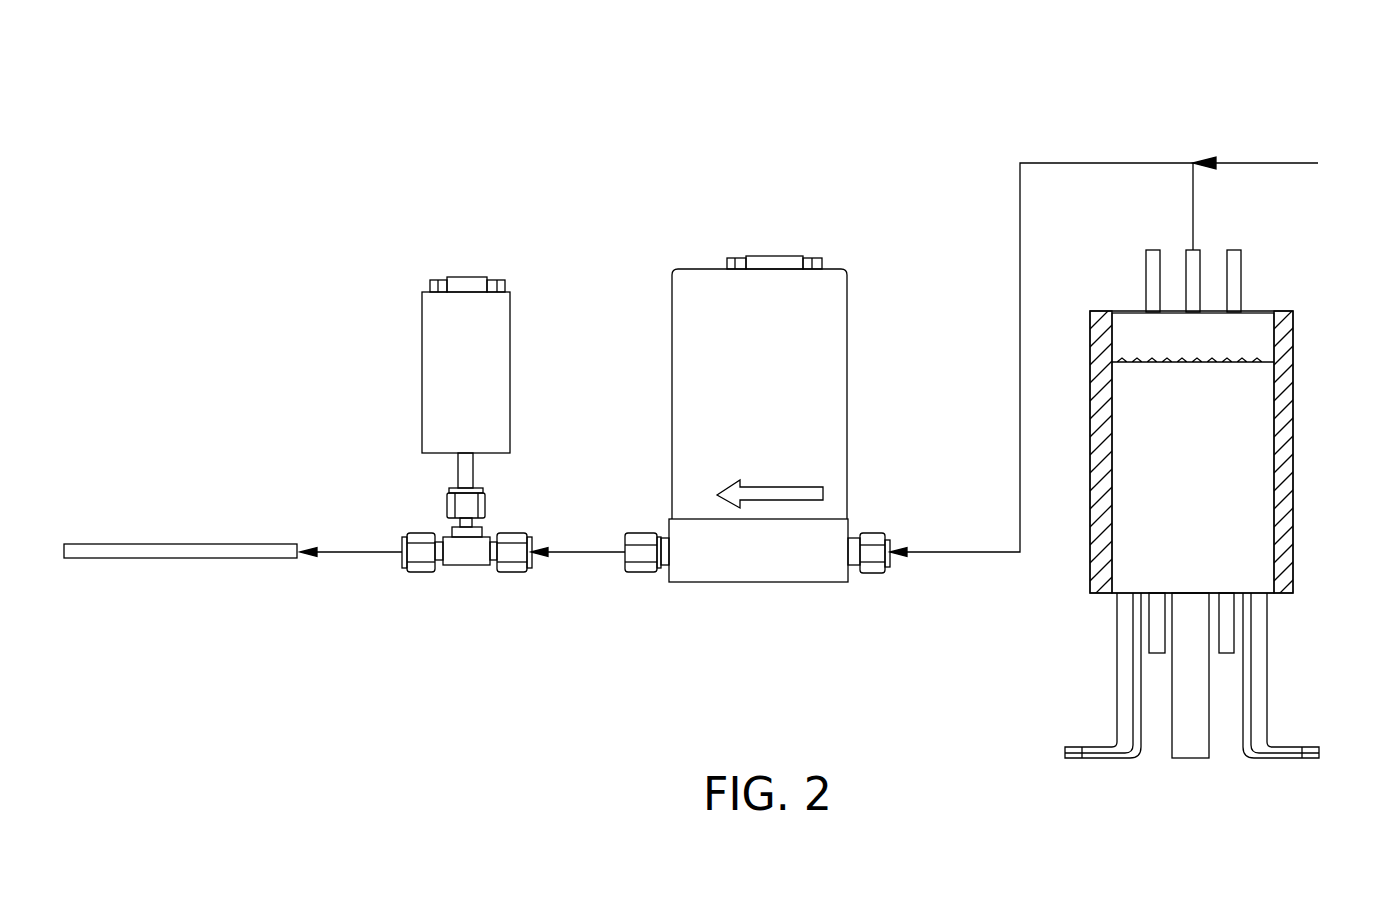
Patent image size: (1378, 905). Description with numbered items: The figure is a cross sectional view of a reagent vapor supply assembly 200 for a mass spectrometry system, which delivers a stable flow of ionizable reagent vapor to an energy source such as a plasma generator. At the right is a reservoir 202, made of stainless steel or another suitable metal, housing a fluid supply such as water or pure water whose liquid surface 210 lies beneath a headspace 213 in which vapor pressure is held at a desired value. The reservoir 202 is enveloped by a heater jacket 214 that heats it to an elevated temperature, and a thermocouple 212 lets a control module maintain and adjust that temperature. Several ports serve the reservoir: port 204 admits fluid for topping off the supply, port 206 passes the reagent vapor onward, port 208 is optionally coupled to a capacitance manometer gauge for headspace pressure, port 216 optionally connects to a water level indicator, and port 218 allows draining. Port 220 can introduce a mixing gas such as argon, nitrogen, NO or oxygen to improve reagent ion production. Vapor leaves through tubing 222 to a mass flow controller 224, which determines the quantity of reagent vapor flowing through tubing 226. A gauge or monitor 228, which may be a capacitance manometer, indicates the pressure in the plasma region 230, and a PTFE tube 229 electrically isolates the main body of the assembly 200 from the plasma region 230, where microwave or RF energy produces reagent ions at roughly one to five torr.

The reagent vapor supply assembly 200 is at (800, 134).
The reservoir 202 is at (1193, 513).
The port 204 is at (1148, 247).
The port 206 is at (1197, 247).
The port 208 is at (1235, 247).
The liquid surface 210 is at (1204, 360).
The thermocouple 212 is at (1278, 442).
The headspace 213 is at (1193, 350).
The heater jacket 214 is at (1293, 543).
The port 216 is at (1227, 656).
The port 218 is at (1152, 656).
The port 220 is at (1305, 165).
The tubing 222 is at (1020, 382).
The mass flow controller 224 is at (785, 392).
The tubing 226 is at (583, 556).
The gauge or monitor 228 is at (490, 384).
The tube 229 is at (353, 556).
The plasma region 230 is at (182, 542).